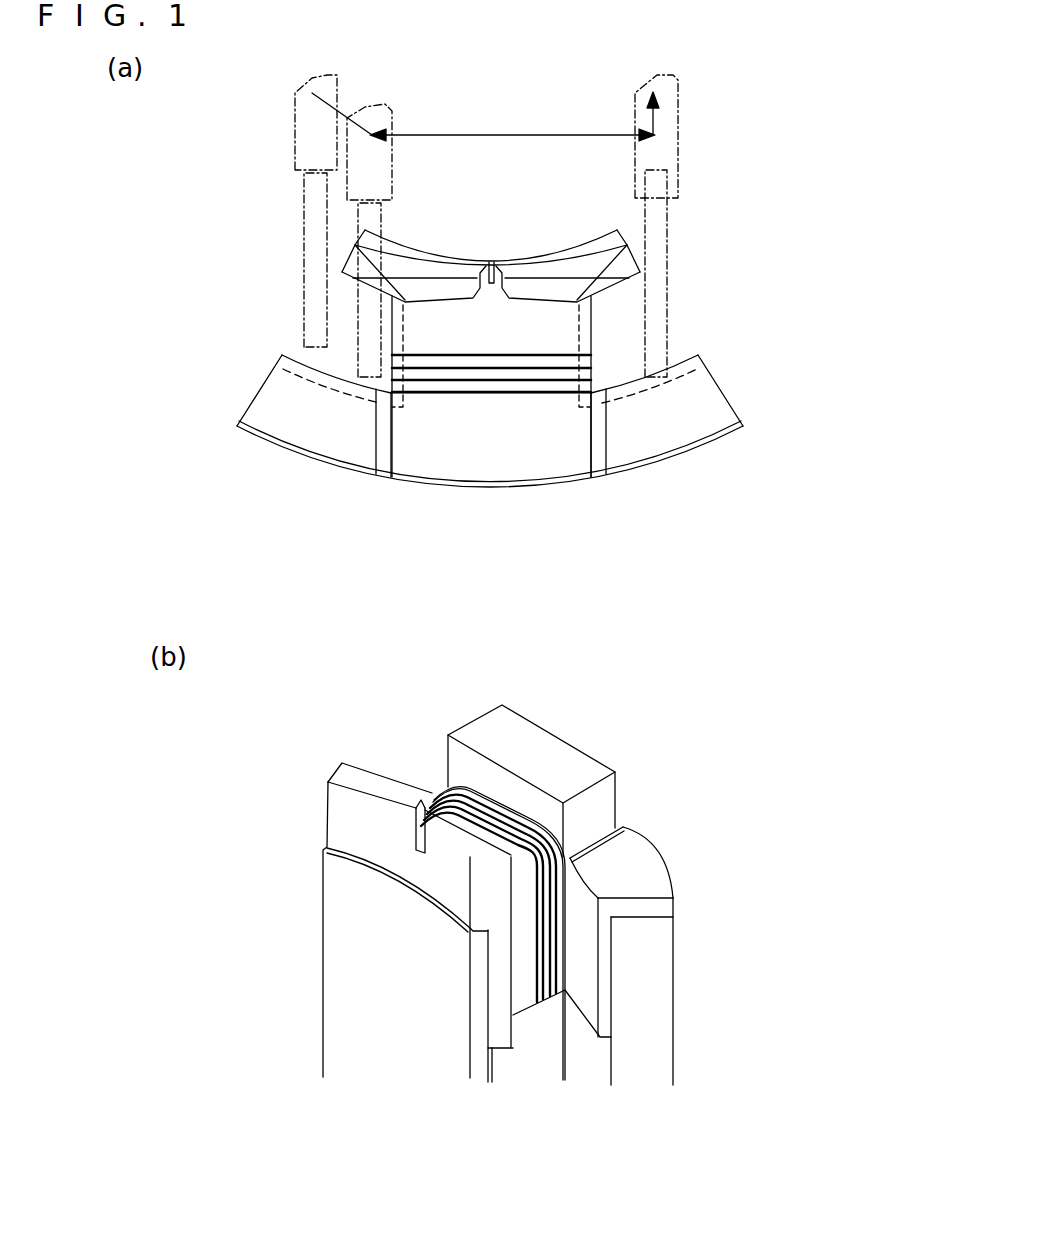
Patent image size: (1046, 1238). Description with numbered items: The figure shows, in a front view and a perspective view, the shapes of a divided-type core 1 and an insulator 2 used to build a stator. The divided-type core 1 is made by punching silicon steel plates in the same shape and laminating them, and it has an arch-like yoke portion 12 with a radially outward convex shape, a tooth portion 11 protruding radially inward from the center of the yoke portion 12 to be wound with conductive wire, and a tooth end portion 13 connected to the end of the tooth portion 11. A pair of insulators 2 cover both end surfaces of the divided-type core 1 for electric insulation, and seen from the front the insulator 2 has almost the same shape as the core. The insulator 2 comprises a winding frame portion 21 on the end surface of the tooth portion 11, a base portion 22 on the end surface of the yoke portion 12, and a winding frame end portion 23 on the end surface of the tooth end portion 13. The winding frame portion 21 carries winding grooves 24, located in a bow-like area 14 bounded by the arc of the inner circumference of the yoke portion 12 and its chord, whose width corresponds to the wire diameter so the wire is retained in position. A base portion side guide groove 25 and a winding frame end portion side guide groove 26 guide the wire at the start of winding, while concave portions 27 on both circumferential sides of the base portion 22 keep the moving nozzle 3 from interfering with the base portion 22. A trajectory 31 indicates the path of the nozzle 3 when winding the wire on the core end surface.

The divided-type core 1 is at (613, 257).
The insulator 2 is at (688, 408).
The nozzle 3 is at (293, 102).
The tooth portion 11 is at (563, 335).
The yoke portion 12 is at (510, 465).
The tooth end portion 13 is at (398, 253).
The bow-like area 14 is at (632, 368).
The winding frame portion 21 is at (375, 312).
The base portion 22 is at (457, 460).
The winding frame end portion 23 is at (537, 260).
The winding grooves 24 is at (435, 363).
The base portion side guide groove 25 is at (383, 462).
The winding frame end portion side guide groove 26 is at (500, 256).
The concave portions 27 is at (330, 417).
The trajectory 31 is at (428, 133).